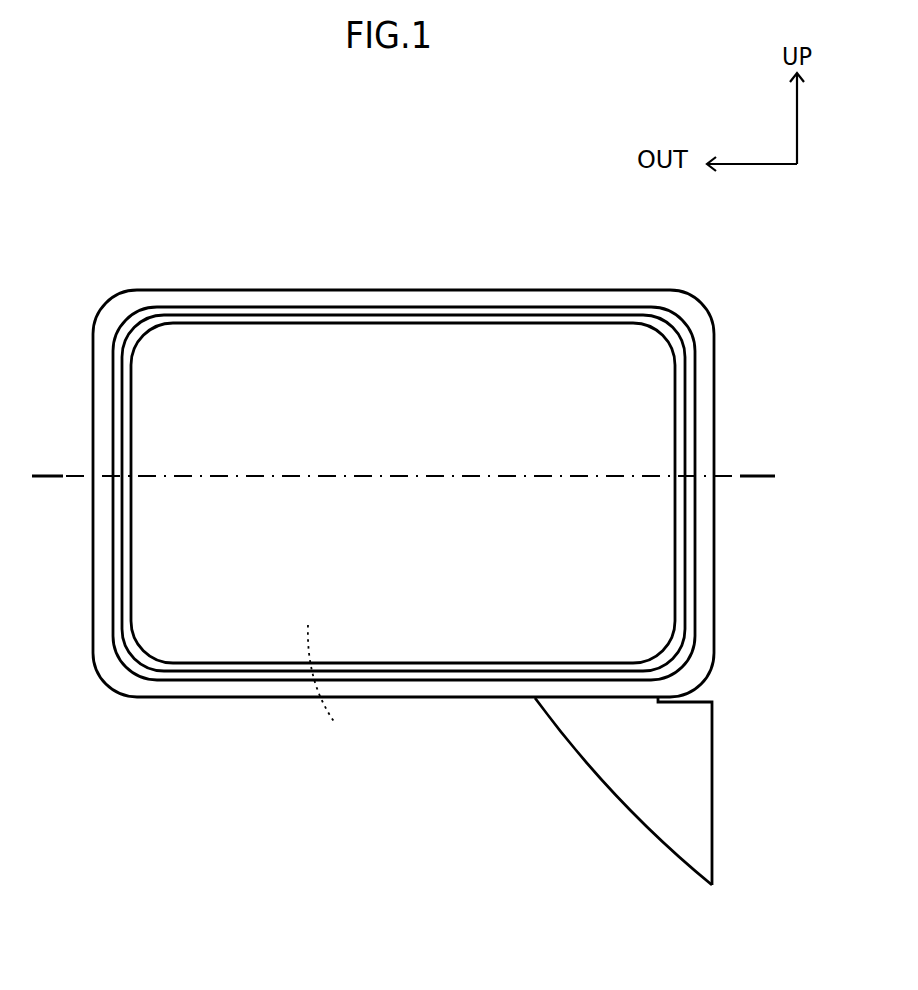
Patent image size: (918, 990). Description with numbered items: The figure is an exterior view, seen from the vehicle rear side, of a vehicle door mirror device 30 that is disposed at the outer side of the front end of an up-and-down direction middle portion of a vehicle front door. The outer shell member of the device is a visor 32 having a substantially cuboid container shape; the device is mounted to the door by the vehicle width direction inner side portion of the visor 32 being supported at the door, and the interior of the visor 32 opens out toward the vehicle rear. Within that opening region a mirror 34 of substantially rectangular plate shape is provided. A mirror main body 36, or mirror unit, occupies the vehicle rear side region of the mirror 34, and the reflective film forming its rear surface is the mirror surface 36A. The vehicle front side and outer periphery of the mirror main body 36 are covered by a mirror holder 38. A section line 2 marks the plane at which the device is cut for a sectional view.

The vehicle door mirror device 30 is at (278, 212).
The visor 32 is at (477, 290).
The mirror 34 is at (122, 362).
The mirror main body 36 is at (418, 640).
The mirror surface 36A is at (338, 689).
The mirror holder 38 is at (203, 671).
The section line 2- 2 is at (758, 465).